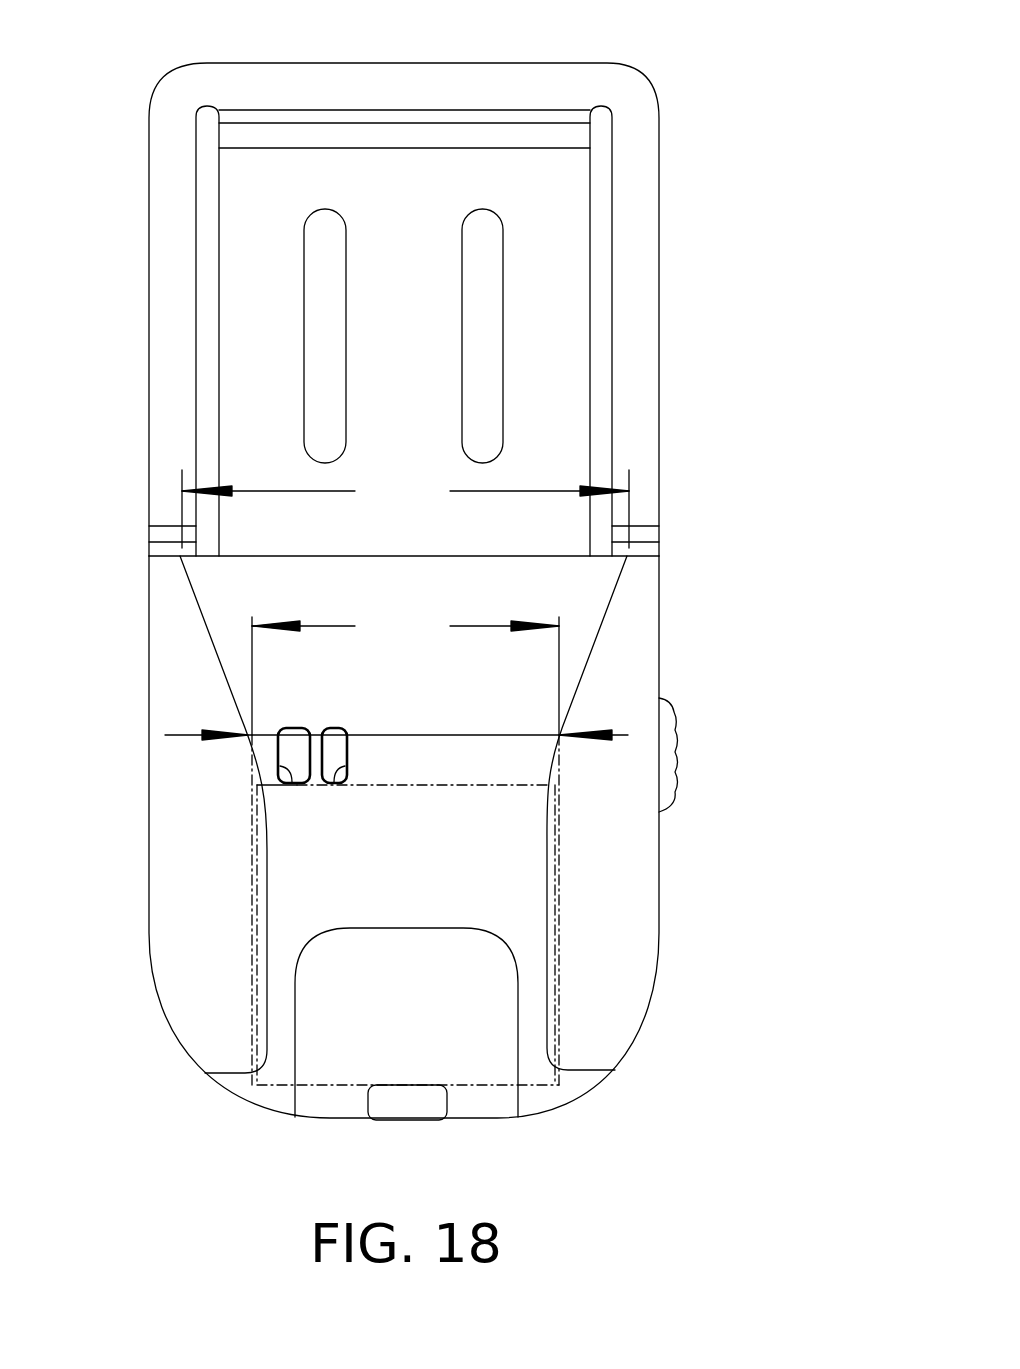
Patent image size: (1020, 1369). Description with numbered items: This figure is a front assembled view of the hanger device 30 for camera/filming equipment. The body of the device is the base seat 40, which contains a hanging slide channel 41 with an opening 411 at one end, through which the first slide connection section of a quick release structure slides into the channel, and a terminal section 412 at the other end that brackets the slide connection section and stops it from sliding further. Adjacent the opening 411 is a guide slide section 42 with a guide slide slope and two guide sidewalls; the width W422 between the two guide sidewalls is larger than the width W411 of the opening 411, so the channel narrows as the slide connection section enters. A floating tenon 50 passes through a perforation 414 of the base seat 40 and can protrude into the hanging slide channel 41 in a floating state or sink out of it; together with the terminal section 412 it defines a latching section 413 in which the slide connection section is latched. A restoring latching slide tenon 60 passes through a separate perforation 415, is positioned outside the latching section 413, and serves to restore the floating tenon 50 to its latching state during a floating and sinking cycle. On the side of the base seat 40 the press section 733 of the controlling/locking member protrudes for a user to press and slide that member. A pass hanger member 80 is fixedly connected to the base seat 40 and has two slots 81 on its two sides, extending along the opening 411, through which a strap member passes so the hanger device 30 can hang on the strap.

The hanger device 30 is at (150, 1113).
The base seat 40 is at (152, 942).
The hanging slide channel 41 is at (262, 912).
The guide slide section 42 is at (240, 601).
The floating tenon 50 is at (293, 745).
The restoring latching slide tenon 60 is at (333, 745).
The pass hanger member 80 is at (640, 78).
The slot 81 is at (219, 289).
The opening 411 is at (397, 735).
The terminal section 412 is at (407, 1085).
The latching section 413 is at (525, 785).
The perforation 414 is at (292, 776).
The perforation 415 is at (334, 776).
The press section 733 is at (675, 739).
The width of the opening W411 is at (405, 672).
The width between the two guide sidewalls W422 is at (405, 509).